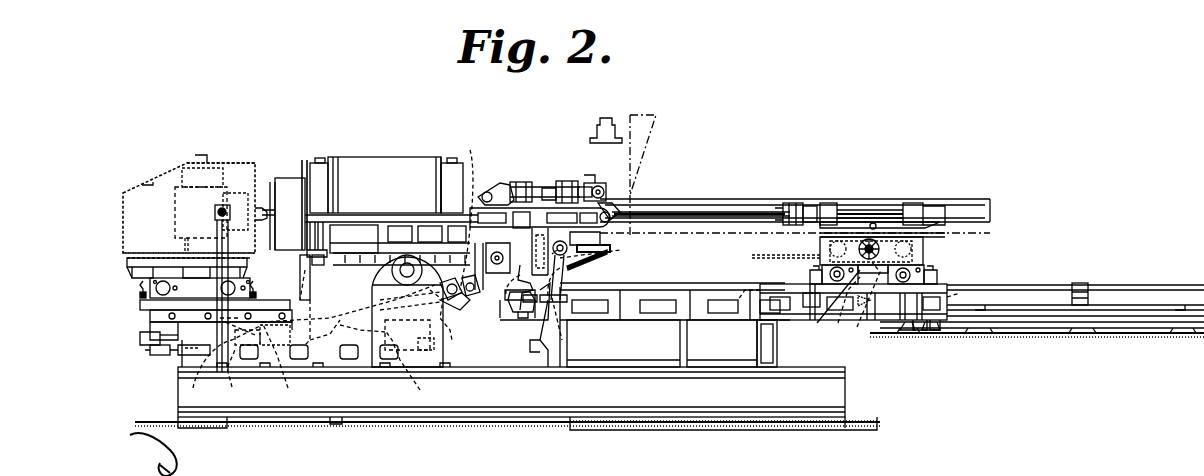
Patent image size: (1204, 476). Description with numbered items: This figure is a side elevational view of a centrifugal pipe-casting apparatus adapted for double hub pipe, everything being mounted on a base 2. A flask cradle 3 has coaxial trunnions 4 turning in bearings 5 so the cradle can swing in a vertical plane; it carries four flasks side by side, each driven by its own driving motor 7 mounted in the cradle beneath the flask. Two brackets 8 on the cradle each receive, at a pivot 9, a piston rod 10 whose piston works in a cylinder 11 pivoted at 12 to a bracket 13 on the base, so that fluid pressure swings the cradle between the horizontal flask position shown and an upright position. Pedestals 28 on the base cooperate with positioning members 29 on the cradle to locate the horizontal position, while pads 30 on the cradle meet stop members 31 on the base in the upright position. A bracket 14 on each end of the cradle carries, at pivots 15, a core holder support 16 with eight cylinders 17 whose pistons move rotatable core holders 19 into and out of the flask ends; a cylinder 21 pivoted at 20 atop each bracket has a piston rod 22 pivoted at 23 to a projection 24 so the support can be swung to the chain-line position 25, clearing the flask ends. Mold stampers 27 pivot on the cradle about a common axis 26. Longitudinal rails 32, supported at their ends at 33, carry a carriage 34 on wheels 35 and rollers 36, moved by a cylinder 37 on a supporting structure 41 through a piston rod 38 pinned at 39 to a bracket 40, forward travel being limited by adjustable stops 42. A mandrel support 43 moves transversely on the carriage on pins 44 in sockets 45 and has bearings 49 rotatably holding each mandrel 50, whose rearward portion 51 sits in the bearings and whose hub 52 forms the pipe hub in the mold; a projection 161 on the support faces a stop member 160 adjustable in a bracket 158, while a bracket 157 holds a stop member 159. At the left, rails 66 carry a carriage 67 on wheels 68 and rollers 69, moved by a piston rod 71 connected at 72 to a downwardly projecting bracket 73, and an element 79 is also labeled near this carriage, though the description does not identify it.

The base 2 is at (500, 380).
The flask cradle 3 is at (398, 157).
The trunnions 4 is at (372, 287).
The bearings 5 is at (380, 245).
The driving motor 7 is at (447, 321).
The brackets 8 is at (455, 300).
The pivot 9 is at (470, 296).
The piston rod 10 is at (462, 310).
The cylinder 11 is at (348, 342).
The pivot 12 is at (255, 360).
The bracket 13 is at (227, 364).
The bracket 14 is at (420, 205).
The pivots 15 is at (656, 183).
The core holder support 16 is at (571, 169).
The cylinders 17 is at (610, 249).
The core holder 19 is at (545, 182).
The pivot 20 is at (500, 183).
The cylinder 21 is at (512, 208).
The piston rod 22 is at (584, 178).
The pivot 23 is at (600, 186).
The projection 24 is at (612, 204).
The chain line position 25 is at (590, 130).
The common axis 26 is at (470, 150).
The mold stampers 27 is at (525, 272).
The pedestals 28 is at (305, 288).
The positioning members 29 is at (312, 262).
The pads 30 is at (522, 254).
The stop members 31 is at (330, 359).
The rails 32 is at (700, 286).
The rail end supports 33 is at (925, 335).
The carriage 34 is at (935, 268).
The wheels 35 is at (822, 275).
The rollers 36 is at (770, 290).
The cylinder 37 is at (1043, 283).
The piston rod 38 is at (858, 325).
The pin 39 is at (838, 325).
The bracket 40 is at (822, 323).
The supporting structure 41 is at (1048, 318).
The adjustable stops 42 is at (515, 320).
The mandrel support 43 is at (878, 245).
The pins 44 is at (820, 244).
The sockets 45 is at (805, 256).
The bearings 49 is at (906, 189).
The mandrel 50 is at (712, 212).
The rearward portion 51 is at (900, 222).
The hub 52 is at (790, 203).
The rails 66 is at (148, 320).
The carriage 67 is at (150, 288).
The wheels 68 is at (217, 290).
The rollers 69 is at (143, 300).
The piston rod 71 is at (182, 362).
The connection 72 is at (178, 352).
The bracket 73 is at (140, 340).
The spring 79 is at (145, 352).
The bracket 157 is at (195, 216).
The bracket 158 is at (565, 276).
The stop member 159 is at (193, 191).
The stop member 160 is at (604, 261).
The projection 161 is at (920, 236).